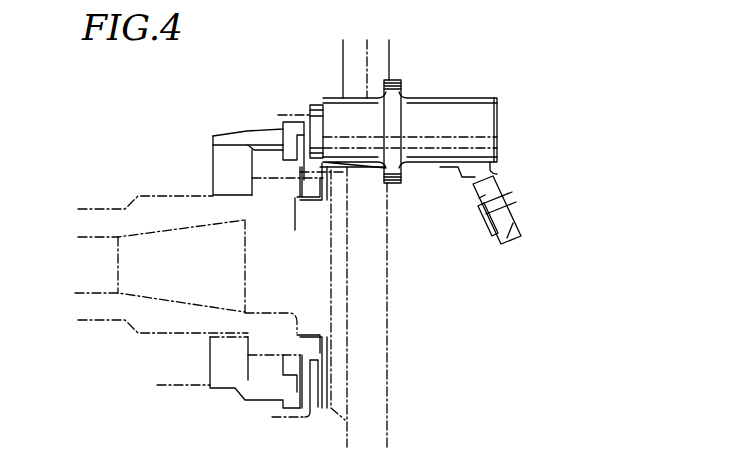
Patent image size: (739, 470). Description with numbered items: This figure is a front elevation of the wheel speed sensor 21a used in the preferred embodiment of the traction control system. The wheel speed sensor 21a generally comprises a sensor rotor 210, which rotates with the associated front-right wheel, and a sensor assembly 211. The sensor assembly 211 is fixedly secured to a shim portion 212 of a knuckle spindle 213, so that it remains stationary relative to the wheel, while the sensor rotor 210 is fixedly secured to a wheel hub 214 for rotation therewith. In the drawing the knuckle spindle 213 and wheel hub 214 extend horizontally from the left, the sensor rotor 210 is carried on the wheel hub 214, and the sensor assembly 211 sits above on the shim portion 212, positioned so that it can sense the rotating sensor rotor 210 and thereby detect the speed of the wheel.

The wheel speed sensor 21a is at (417, 87).
The sensor rotor 210 is at (246, 131).
The sensor assembly 211 is at (480, 127).
The shim portion 212 is at (367, 291).
The knuckle spindle 213 is at (150, 290).
The wheel hub 214 is at (135, 218).